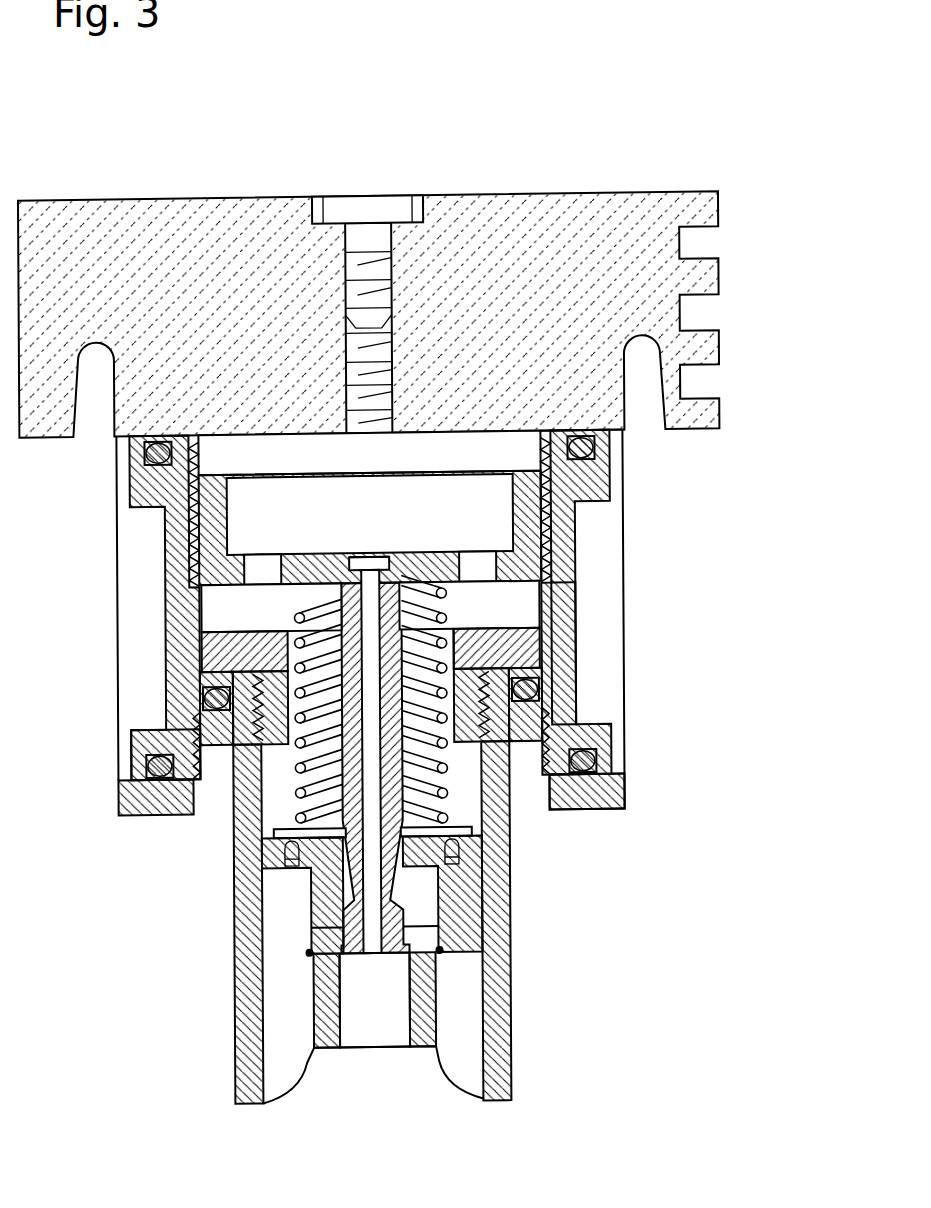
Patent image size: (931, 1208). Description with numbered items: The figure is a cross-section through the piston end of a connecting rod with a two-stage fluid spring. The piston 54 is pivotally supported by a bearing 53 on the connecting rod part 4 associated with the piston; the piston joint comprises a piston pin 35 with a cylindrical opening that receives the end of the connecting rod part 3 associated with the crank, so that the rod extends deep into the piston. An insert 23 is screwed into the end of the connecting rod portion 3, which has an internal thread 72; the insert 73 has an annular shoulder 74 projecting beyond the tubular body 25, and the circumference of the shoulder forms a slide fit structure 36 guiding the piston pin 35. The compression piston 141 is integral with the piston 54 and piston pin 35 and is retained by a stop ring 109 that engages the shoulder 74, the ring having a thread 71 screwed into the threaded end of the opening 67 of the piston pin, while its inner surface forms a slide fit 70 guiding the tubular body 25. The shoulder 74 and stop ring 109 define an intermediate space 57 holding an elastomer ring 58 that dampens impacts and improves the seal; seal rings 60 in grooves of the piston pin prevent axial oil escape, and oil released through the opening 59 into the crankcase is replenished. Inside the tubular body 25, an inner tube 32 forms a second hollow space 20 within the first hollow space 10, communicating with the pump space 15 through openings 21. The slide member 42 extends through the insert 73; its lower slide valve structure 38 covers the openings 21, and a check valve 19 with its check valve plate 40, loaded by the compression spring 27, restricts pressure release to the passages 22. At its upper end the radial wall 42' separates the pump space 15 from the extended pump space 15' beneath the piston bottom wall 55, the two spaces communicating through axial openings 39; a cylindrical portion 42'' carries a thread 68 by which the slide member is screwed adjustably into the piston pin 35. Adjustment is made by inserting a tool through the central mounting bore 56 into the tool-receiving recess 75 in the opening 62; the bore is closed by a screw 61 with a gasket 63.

The connecting rod part 3 is at (413, 641).
The connecting rod part 4 is at (655, 467).
The hollow space 10 is at (383, 1035).
The pump space 15 is at (198, 604).
The extended pump space 15' is at (370, 528).
The check valve 19 is at (307, 937).
The second hollow space 20 is at (285, 1053).
The openings 21 is at (440, 934).
The passages 22 is at (283, 867).
The insert 23 is at (402, 899).
The tubular body 25 is at (500, 1014).
The compression spring 27 is at (453, 771).
The inner tube 32 is at (422, 1011).
The piston pin 35 is at (553, 614).
The slide fit structure 36 is at (543, 640).
The slide valve structure 38 is at (348, 943).
The openings 39 is at (262, 565).
The check valve plate 40 is at (273, 832).
The slide member 42 is at (461, 766).
The radial wall 42' is at (469, 532).
The cylindrical portion 42'' is at (631, 524).
The bearing 53 is at (563, 785).
The piston 54 is at (154, 193).
The piston bottom wall 55 is at (262, 436).
The central mounting bore 56 is at (359, 350).
The intermediate space 57 is at (507, 712).
The elastomer ring 58 is at (210, 693).
The opening 59 is at (180, 644).
The seal rings 60 is at (545, 772).
The screw 61 is at (343, 195).
The opening 62 is at (390, 545).
The gasket 63 is at (408, 196).
The opening 67 is at (543, 603).
The thread 68 is at (550, 537).
The slide fit 70 is at (195, 718).
The thread 71 is at (203, 740).
The internal thread 72 is at (543, 739).
The insert 73 is at (523, 643).
The annular shoulder 74 is at (538, 694).
The tool-receiving recess 75 is at (365, 558).
The stop ring 109 is at (217, 735).
The compression piston 141 is at (548, 429).